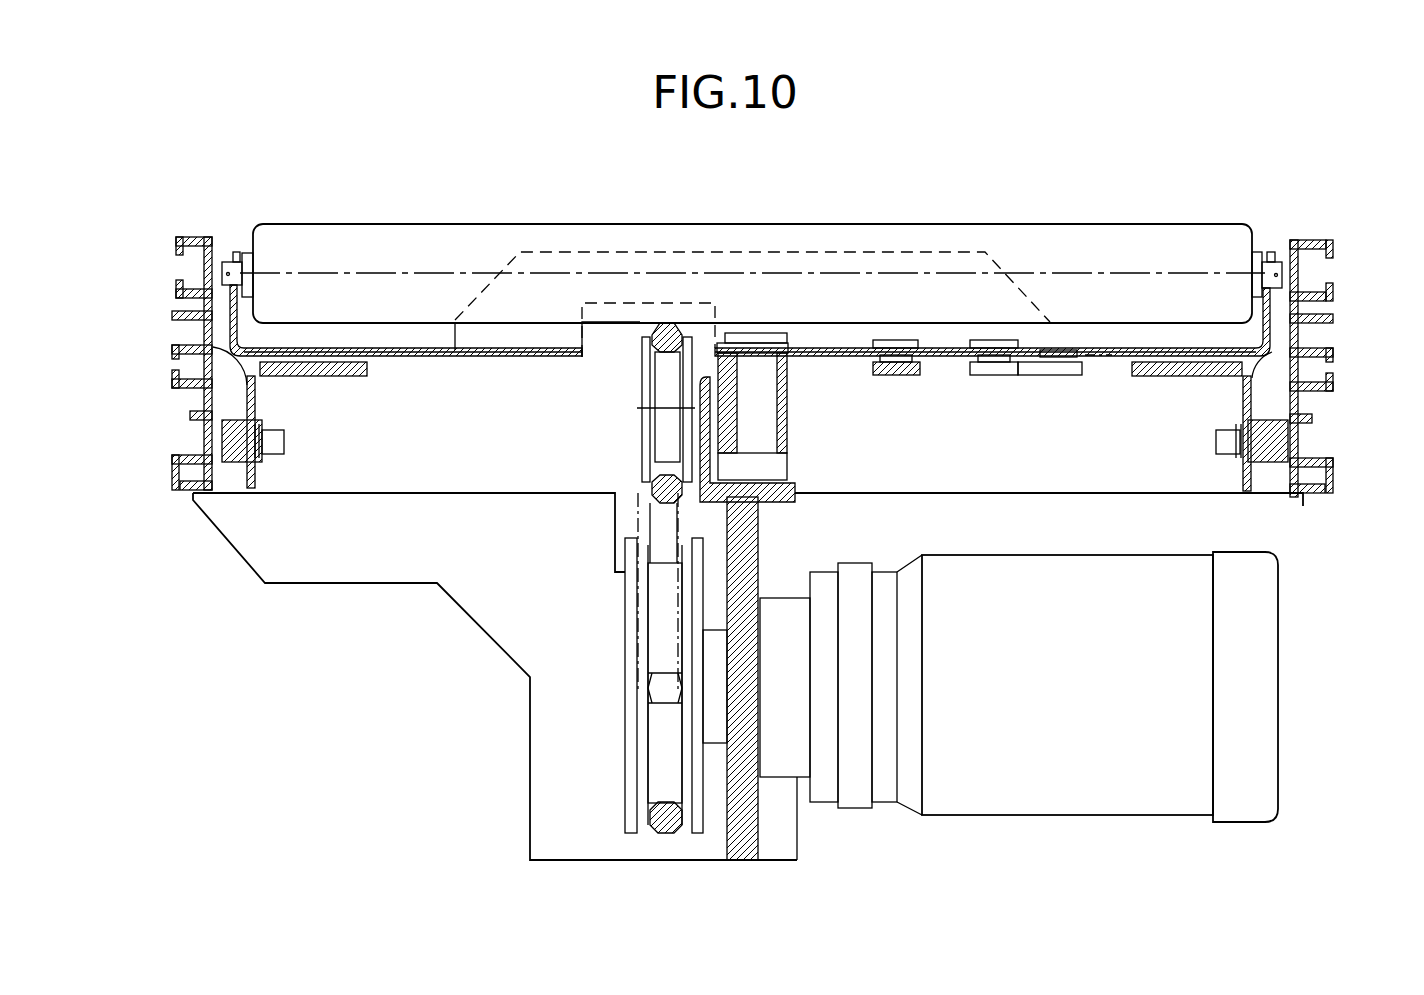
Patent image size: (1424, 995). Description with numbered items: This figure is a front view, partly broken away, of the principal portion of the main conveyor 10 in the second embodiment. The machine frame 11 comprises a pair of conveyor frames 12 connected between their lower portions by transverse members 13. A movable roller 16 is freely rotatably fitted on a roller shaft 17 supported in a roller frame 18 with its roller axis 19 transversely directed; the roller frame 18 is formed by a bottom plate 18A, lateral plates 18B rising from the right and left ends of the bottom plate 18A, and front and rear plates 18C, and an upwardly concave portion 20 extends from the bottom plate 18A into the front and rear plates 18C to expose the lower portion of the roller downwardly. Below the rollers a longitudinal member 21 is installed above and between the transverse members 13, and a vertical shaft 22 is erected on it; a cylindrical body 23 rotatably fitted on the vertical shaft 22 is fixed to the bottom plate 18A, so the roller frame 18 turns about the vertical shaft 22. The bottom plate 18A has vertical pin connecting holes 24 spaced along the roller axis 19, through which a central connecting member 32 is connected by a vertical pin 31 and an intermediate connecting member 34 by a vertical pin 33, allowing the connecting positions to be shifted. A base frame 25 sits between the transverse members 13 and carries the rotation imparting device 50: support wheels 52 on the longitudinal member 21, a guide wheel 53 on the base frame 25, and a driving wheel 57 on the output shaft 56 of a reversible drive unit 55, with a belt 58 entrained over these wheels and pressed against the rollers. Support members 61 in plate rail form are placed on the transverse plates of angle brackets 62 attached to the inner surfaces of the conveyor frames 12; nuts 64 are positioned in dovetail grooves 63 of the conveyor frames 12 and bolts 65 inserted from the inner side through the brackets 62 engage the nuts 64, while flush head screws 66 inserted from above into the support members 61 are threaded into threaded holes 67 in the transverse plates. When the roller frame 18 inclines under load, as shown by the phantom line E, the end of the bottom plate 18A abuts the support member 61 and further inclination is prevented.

The main conveyor 10 is at (1237, 176).
The machine frame 11 is at (197, 497).
The conveyor frame 12 is at (190, 390).
The transverse member 13 is at (407, 567).
The movable roller 16 is at (1122, 242).
The roller shaft 17 is at (1274, 268).
The roller frame 18 is at (756, 418).
The bottom plate 18A is at (492, 360).
The lateral plate 18B is at (228, 322).
The front and rear plate 18C is at (593, 245).
The roller axis 19 is at (418, 275).
The upwardly concave portion 20 is at (605, 340).
The longitudinal member 21 is at (765, 490).
The vertical shaft 22 is at (760, 415).
The cylindrical body 23 is at (790, 450).
The vertical pin connecting hole 24 is at (962, 356).
The base frame 25 is at (742, 852).
The vertical pin 31 is at (900, 350).
The central connecting member 32 is at (898, 378).
The vertical pin 33 is at (992, 378).
The intermediate connecting member 34 is at (1048, 378).
The rotation imparting device 50 is at (570, 727).
The support wheel 52 is at (700, 355).
The guide wheel 53 is at (645, 520).
The reversible drive unit 55 is at (997, 800).
The output shaft 56 is at (715, 705).
The driving wheel 57 is at (630, 765).
The belt 58 is at (668, 335).
The support member 61 is at (352, 348).
The bracket 62 is at (244, 352).
The dovetail groove 63 is at (238, 424).
The nut 64 is at (232, 456).
The bolt 65 is at (272, 456).
The flush head screw 66 is at (313, 362).
The threaded hole 67 is at (318, 380).
The phantom line E is at (1208, 420).